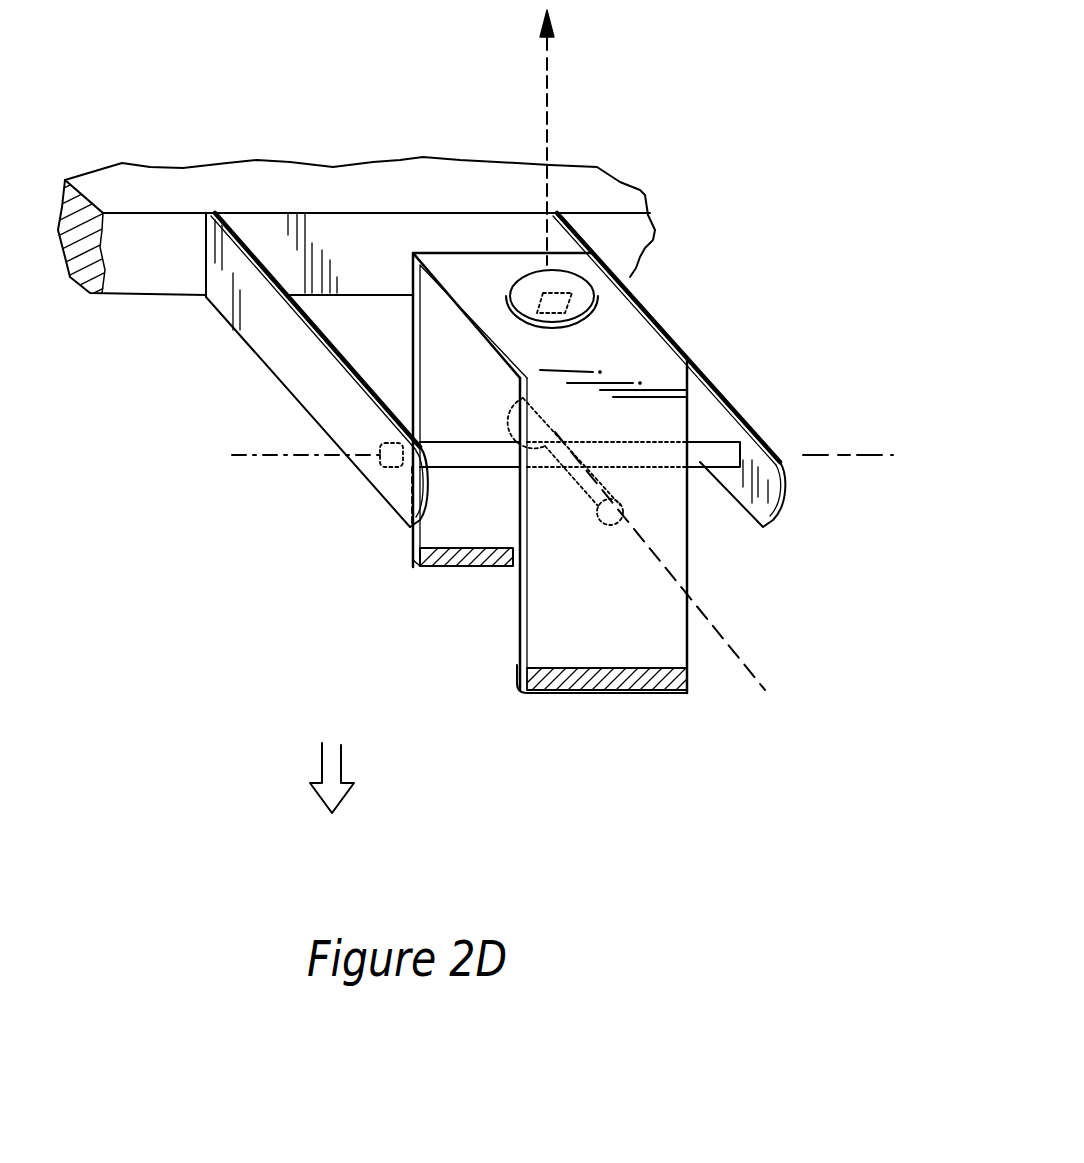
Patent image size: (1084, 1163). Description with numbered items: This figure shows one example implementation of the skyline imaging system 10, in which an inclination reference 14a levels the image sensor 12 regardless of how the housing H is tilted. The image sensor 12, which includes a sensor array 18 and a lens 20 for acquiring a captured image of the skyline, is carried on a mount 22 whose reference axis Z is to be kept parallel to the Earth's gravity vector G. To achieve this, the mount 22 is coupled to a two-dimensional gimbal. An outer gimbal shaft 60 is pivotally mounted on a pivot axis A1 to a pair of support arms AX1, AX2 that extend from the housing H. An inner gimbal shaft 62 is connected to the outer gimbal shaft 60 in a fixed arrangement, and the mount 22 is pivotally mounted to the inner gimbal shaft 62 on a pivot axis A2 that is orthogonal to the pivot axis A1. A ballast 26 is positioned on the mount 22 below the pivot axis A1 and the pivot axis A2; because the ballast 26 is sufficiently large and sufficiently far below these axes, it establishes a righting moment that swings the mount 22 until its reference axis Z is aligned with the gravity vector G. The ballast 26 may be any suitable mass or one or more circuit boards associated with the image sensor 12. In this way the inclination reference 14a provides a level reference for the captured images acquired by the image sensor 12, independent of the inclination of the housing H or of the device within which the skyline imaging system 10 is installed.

The skyline imaging system 10 is at (258, 670).
The image sensor 12 is at (527, 275).
The inclination reference 14a is at (375, 553).
The sensor array 18 is at (570, 296).
The lens 20 is at (543, 275).
The mount 22 is at (545, 572).
The ballast 26 is at (540, 693).
The outer gimbal shaft 60 is at (717, 447).
The inner gimbal shaft 62 is at (585, 503).
The support arm AX1 is at (690, 347).
The support arm AX2 is at (307, 365).
The pivot axis A1 is at (853, 455).
The pivot axis A2 is at (724, 650).
The reference axis Z is at (550, 55).
The Earth's gravity vector G is at (341, 755).
The housing H is at (290, 202).